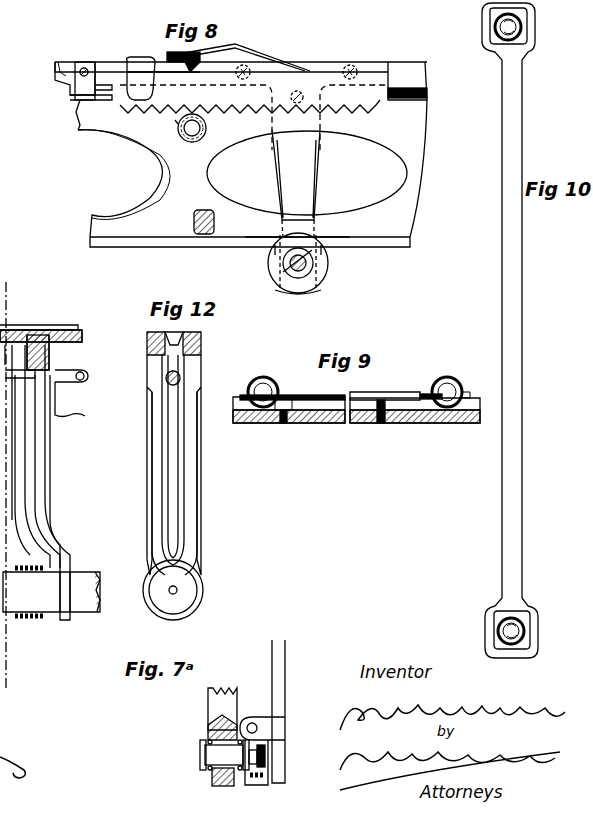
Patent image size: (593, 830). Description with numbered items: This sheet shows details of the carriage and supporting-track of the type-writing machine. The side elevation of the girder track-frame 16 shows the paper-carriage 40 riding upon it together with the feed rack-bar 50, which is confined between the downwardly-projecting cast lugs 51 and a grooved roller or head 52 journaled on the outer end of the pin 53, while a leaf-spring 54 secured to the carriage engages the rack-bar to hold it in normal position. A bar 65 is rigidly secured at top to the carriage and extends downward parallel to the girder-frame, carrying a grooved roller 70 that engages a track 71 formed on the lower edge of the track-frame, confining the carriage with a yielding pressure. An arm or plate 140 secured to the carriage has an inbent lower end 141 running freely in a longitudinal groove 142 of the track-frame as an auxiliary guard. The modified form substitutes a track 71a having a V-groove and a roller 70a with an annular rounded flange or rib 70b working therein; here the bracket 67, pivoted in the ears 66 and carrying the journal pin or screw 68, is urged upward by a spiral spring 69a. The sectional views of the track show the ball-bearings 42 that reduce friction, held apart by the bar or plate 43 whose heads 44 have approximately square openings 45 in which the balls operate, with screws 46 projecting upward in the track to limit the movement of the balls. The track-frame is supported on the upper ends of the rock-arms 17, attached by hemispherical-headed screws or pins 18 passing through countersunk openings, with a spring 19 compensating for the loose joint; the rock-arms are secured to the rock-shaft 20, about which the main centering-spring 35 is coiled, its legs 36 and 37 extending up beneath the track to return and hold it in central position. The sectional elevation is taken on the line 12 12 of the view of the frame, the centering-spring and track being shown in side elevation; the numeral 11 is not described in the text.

In FIG. 11, the table 11 is at (39, 312).
In FIG. 11, the centerline of table 12 is at (9, 477).
In FIG. 8, the girder track-frame 16 is at (165, 205).
In FIG. 9, the girder track-frame 16 is at (330, 424).
In FIG. 11, the girder track-frame 16 is at (110, 356).
In FIG. 11, the rock-arms 17 is at (35, 482).
In FIG. 12, the rock-arms 17 is at (193, 494).
In FIG. 11, the screws or pins 18 is at (40, 334).
In FIG. 12, the screws or pins 18 is at (173, 350).
In FIG. 11, the spring 19 is at (80, 383).
In FIG. 11, the rock-shaft 20 is at (82, 598).
In FIG. 12, the rock-shaft 20 is at (182, 589).
In FIG. 11, the main centering-spring 35 is at (35, 620).
In FIG. 12, the main centering-spring 35 is at (196, 606).
In FIG. 11, the leg of centering-spring 36 is at (17, 446).
In FIG. 12, the leg of centering-spring 36 is at (160, 478).
In FIG. 12, the leg of centering-spring 37 is at (184, 466).
In FIG. 8, the paper-carriage 40 is at (62, 70).
In FIG. 10, the ball-bearings 42 is at (500, 40).
In FIG. 9, the ball-bearings 42 is at (262, 378).
In FIG. 10, the bar or plate 43 is at (522, 300).
In FIG. 9, the bar or plate 43 is at (402, 394).
In FIG. 10, the heads 44 is at (530, 26).
In FIG. 9, the heads 44 is at (465, 392).
In FIG. 10, the square openings 45 is at (496, 26).
In FIG. 9, the screws 46 is at (282, 412).
In FIG. 8, the feed rack-bar 50 is at (358, 92).
In FIG. 8, the cast lugs 51 is at (135, 72).
In FIG. 8, the grooved roller or head 52 is at (174, 121).
In FIG. 8, the pin 53 is at (192, 140).
In FIG. 8, the leaf-spring 54 is at (266, 61).
In FIG. 8, the bar 65 is at (307, 185).
In FIG. 7A, the bar 65 is at (278, 676).
In FIG. 7A, the ears 66 is at (255, 722).
In FIG. 7A, the bracket 67 is at (268, 762).
In FIG. 8, the journal pin or screw 68 is at (285, 262).
In FIG. 7A, the journal pin or screw 68 is at (203, 757).
In FIG. 7A, the spiral spring 69a is at (268, 784).
In FIG. 8, the grooved roller 70 is at (323, 268).
In FIG. 7A, the roller 70a is at (214, 779).
In FIG. 7A, the annular rounded flange or rib 70b is at (226, 786).
In FIG. 8, the track 71 is at (390, 246).
In FIG. 7A, the track 71a is at (210, 712).
In FIG. 8, the arm or plate 140 is at (77, 68).
In FIG. 8, the inbent lower end 141 is at (80, 100).
In FIG. 8, the longitudinal groove 142 is at (428, 94).